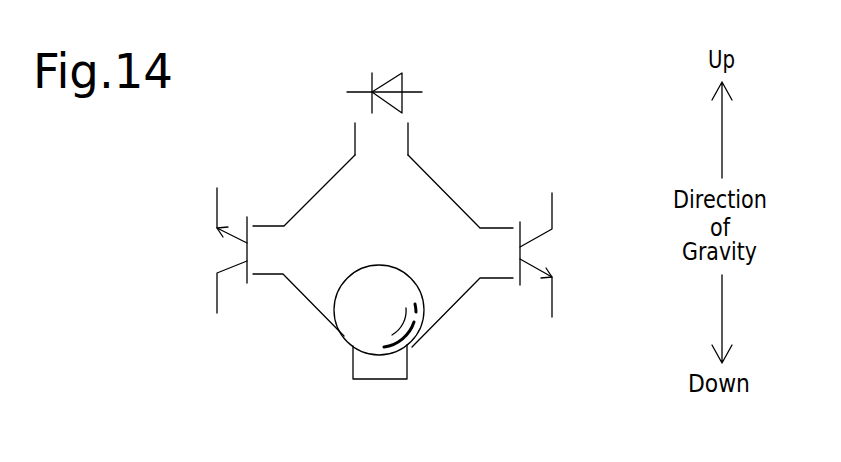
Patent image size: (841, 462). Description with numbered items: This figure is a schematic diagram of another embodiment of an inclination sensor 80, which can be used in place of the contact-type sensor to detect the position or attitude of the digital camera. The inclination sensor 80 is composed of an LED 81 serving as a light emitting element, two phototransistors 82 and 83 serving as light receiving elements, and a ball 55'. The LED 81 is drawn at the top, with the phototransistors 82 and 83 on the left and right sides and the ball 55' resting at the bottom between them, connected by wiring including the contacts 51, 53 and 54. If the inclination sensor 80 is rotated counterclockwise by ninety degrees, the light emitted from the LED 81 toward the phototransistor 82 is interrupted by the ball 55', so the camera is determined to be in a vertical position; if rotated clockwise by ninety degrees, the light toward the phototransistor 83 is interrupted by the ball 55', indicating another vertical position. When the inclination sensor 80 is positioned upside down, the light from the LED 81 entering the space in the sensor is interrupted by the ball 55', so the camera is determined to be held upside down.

The inclination sensor 80 is at (502, 102).
The LED 81 is at (400, 73).
The phototransistor 82 is at (217, 247).
The phototransistor 83 is at (555, 258).
The first contact 51 is at (322, 188).
The third contact 53 is at (300, 292).
The fourth contact 54 is at (445, 318).
The ball 55' is at (379, 282).